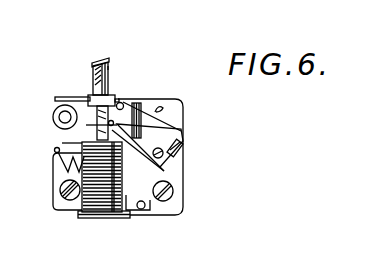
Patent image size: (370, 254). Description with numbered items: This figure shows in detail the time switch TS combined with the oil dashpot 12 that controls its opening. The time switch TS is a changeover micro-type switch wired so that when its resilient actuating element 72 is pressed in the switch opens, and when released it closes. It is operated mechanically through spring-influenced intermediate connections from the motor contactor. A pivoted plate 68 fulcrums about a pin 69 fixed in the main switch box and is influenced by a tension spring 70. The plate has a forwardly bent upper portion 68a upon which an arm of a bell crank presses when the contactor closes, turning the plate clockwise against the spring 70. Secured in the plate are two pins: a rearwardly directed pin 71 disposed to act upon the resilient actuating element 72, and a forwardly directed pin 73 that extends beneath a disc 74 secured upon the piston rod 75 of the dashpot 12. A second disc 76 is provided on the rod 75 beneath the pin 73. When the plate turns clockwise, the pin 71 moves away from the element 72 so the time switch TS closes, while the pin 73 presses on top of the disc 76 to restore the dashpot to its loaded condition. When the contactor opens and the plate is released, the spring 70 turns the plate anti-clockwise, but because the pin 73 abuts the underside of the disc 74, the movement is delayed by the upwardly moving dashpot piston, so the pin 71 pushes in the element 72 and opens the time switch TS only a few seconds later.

The oil dashpot 12 is at (75, 214).
The pivoted plate 68 is at (56, 150).
The forwardly bent upper portion 68a is at (107, 65).
The pin 69 is at (69, 97).
The tension spring 70 is at (165, 214).
The rearwardly directed pin 71 is at (62, 143).
The resilient actuating element 72 is at (147, 199).
The forwardly directed pin 73 is at (122, 103).
The disc 74 is at (108, 86).
The piston rod 75 is at (93, 63).
The second disc 76 is at (111, 123).
The time switch TS is at (173, 133).